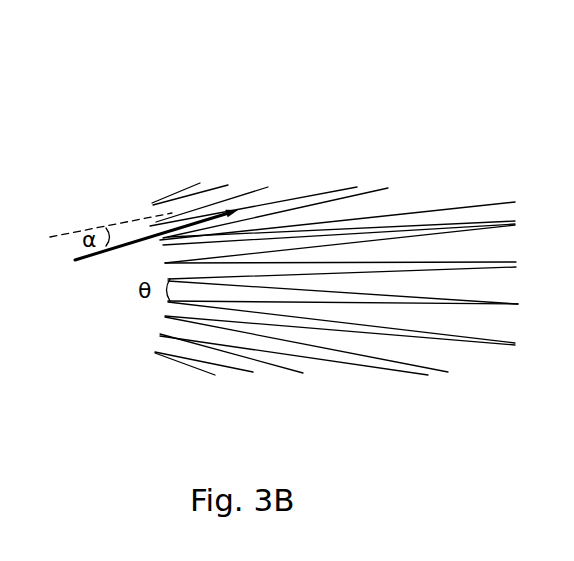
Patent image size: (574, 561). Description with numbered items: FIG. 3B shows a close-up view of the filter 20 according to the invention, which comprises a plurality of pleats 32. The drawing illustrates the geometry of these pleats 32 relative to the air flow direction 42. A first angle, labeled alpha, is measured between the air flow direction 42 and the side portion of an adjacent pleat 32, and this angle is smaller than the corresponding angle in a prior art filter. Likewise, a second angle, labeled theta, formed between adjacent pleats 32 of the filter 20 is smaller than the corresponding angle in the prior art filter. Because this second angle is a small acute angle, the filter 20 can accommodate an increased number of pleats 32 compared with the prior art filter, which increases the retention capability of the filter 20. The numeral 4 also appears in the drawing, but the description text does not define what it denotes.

The filter 20 is at (262, 148).
The air flow direction 42 is at (120, 225).
The pleat 32 is at (435, 209).
The reflective surface 4 is at (138, 242).